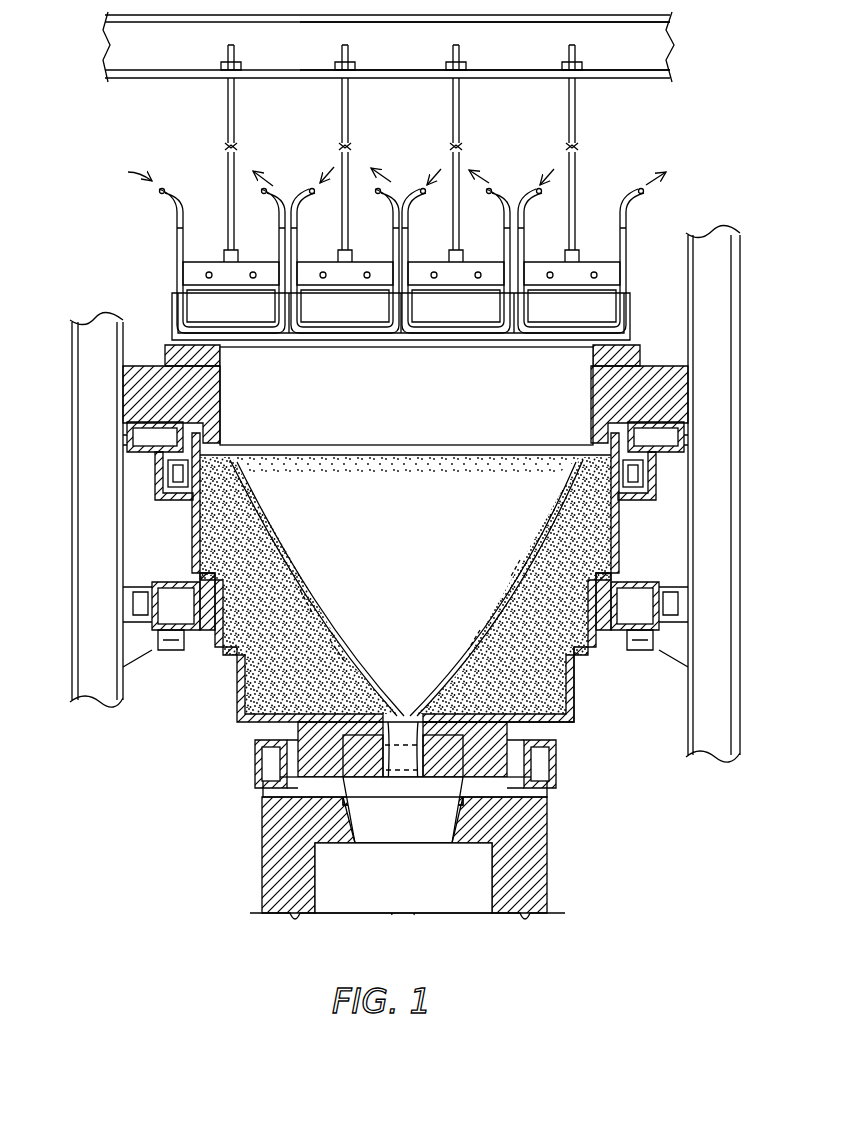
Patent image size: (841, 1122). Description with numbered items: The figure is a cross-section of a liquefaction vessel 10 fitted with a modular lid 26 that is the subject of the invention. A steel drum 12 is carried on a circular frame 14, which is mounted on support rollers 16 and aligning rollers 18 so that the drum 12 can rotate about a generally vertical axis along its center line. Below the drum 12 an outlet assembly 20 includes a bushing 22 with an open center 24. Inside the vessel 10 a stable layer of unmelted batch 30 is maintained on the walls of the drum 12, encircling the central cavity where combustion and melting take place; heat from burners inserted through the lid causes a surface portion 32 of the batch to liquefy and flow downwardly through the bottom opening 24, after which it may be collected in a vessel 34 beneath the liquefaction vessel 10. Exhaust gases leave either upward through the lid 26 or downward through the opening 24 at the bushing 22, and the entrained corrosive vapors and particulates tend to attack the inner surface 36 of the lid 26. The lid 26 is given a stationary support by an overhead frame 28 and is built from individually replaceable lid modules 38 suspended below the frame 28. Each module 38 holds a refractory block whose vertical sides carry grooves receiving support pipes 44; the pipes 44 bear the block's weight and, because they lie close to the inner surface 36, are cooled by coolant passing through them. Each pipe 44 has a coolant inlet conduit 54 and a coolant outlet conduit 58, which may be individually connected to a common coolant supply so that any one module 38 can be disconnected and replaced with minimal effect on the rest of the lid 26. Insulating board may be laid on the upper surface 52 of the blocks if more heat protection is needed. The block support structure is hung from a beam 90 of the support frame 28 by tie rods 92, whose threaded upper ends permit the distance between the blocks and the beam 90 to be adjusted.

The liquefaction vessel 10 is at (712, 198).
The steel drum 12 is at (622, 530).
The circular frame 14 is at (602, 640).
The support rollers 16 is at (172, 653).
The aligning rollers 18 is at (133, 603).
The outlet assembly 20 is at (548, 800).
The bushing 22 is at (352, 722).
The open center 24 is at (407, 732).
The lid 26 is at (173, 314).
The overhead frame 28 is at (105, 32).
The unmelted batch 30 is at (252, 501).
The surface portion 32 is at (300, 590).
The vessel 34 is at (263, 820).
The inner surface 36 is at (300, 343).
The lid module 38 is at (632, 324).
The support pipes 44 is at (176, 256).
The upper surface 52 is at (192, 277).
The coolant inlet conduit 54 is at (184, 206).
The coolant outlet conduit 58 is at (277, 190).
The beam 90 is at (672, 40).
The tie rods 92 is at (577, 103).